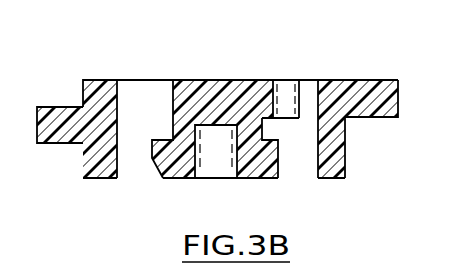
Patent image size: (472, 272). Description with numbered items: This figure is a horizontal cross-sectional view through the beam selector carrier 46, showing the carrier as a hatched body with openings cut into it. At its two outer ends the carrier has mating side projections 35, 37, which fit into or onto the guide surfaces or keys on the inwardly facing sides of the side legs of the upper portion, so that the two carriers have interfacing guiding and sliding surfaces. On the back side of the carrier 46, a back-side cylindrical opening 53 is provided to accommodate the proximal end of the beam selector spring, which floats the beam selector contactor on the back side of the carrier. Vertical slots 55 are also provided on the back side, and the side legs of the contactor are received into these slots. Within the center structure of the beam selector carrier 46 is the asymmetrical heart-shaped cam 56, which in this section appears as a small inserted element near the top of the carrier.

The beam selector carrier 46 is at (388, 66).
The side projection 35 is at (63, 144).
The side projection 37 is at (379, 117).
The vertical slots 55 is at (140, 155).
The back-side cylindrical opening 53 is at (220, 155).
The heart-shaped cam 56 is at (275, 80).